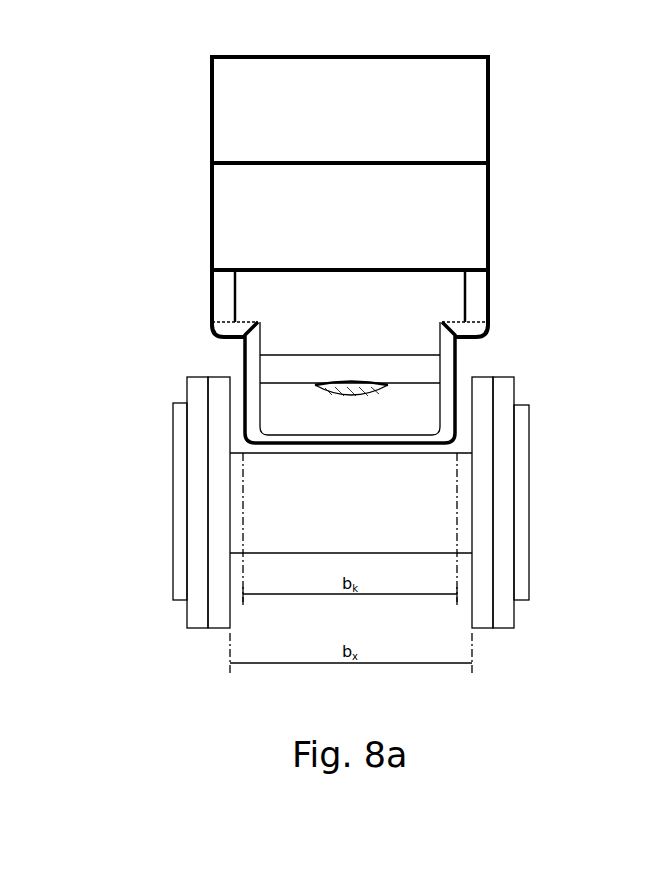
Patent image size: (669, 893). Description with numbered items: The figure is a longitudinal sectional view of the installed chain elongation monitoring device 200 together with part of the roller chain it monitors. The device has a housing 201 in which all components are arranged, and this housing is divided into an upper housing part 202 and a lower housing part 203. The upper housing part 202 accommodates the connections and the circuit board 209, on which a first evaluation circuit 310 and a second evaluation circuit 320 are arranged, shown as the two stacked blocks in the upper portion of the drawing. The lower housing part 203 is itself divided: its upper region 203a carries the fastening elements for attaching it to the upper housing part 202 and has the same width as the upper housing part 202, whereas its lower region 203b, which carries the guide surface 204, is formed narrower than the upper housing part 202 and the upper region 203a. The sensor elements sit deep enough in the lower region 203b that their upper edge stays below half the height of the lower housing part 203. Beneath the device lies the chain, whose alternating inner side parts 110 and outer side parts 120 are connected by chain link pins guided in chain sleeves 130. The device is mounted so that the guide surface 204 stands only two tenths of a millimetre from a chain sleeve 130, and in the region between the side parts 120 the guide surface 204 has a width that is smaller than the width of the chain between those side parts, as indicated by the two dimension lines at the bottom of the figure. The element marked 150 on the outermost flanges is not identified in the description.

The chain elongation monitoring device 200 is at (350, 144).
The second evaluation circuit 320 is at (350, 131).
The first evaluation circuit 310 is at (350, 240).
The upper housing part 202 is at (208, 189).
The housing 201 is at (507, 218).
The upper region of the lower housing part 203a is at (208, 313).
The lower housing part 203 is at (493, 325).
The lower region of the lower housing part 203b is at (243, 362).
The circuit board 209 is at (350, 374).
The guide surface 204 is at (350, 405).
The chain sleeve 130 is at (351, 503).
The inner side part 110 is at (218, 425).
The outer side part 120 is at (202, 448).
The outer flange 150 is at (170, 492).